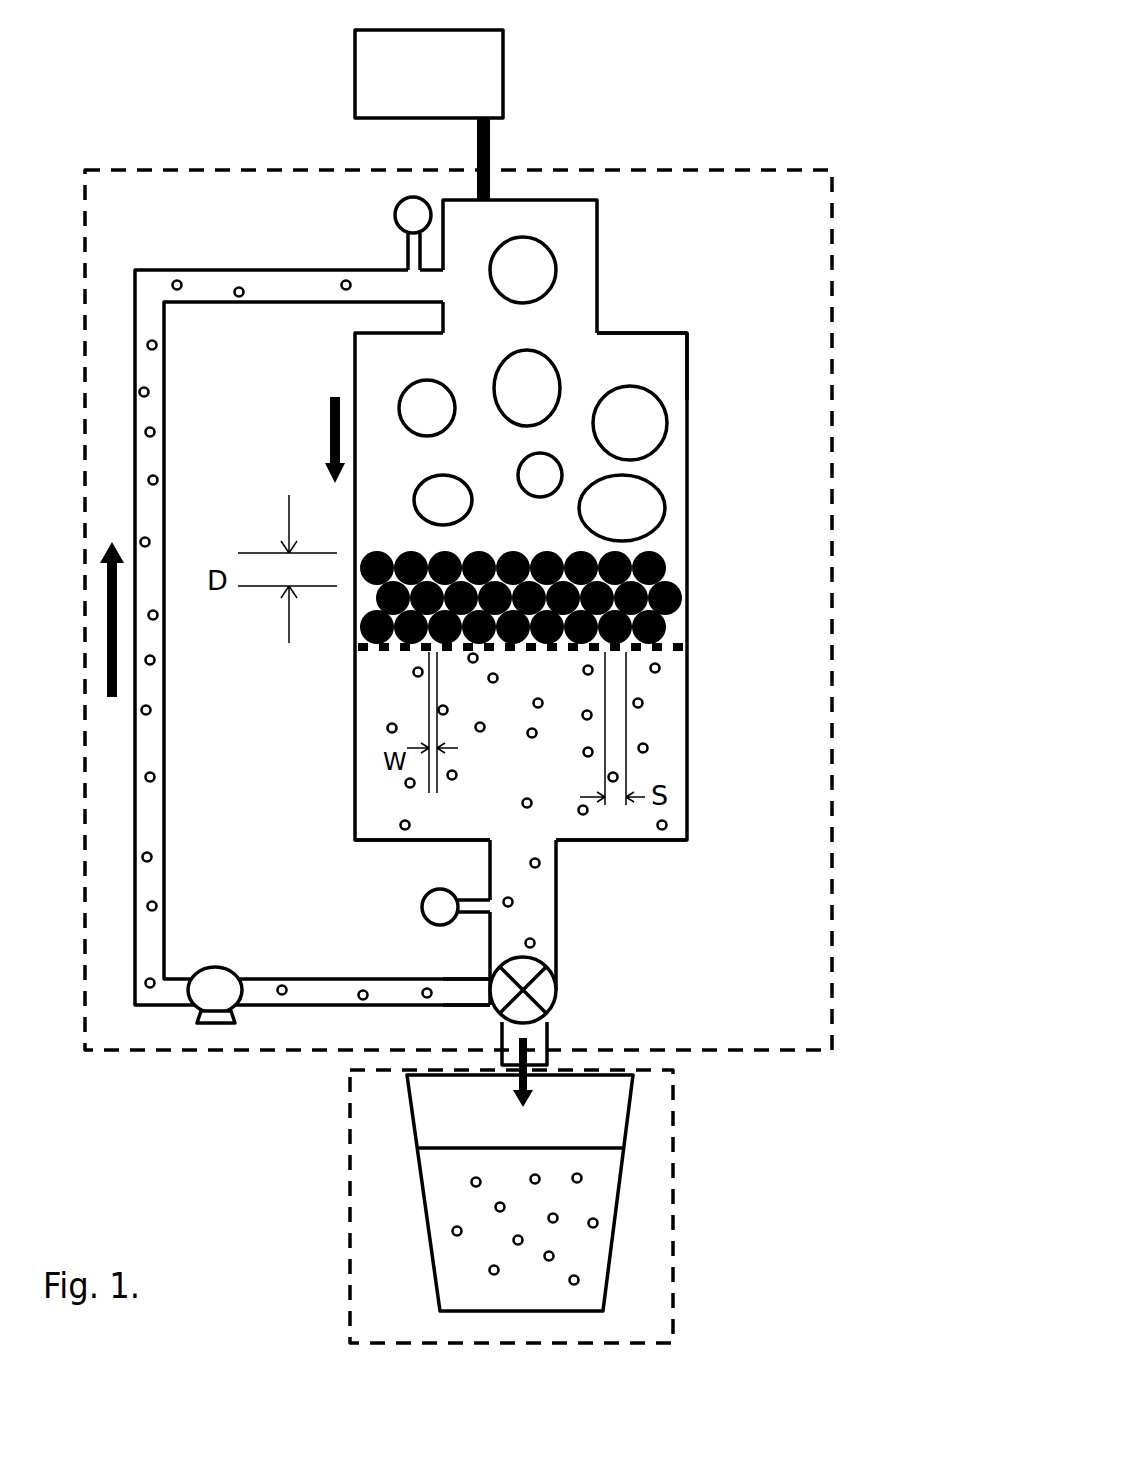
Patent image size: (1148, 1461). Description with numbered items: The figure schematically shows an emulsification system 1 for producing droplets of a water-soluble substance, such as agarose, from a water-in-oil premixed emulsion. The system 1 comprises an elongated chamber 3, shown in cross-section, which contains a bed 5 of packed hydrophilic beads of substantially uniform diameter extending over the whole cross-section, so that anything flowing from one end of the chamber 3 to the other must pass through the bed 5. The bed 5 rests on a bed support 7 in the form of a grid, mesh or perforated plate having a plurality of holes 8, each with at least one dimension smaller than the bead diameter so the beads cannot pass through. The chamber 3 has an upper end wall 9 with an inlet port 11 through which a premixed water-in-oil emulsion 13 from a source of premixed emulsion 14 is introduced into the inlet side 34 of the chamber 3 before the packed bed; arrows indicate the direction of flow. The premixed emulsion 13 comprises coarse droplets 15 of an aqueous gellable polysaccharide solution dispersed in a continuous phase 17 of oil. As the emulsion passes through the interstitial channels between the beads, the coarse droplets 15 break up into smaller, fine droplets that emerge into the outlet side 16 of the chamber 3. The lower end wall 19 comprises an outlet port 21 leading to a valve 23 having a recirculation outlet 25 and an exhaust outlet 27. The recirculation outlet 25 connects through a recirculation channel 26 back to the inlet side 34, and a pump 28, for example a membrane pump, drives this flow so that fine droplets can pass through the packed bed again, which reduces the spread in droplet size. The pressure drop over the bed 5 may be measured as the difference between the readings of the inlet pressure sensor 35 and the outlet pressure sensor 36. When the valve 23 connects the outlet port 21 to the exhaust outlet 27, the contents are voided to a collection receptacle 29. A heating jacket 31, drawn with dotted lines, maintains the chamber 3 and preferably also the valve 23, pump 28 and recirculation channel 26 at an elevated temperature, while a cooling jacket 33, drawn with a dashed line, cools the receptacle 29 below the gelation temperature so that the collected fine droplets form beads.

The emulsification system 1 is at (745, 190).
The elongated chamber 3 is at (687, 518).
The bed 5 is at (687, 578).
The bed support 7 is at (665, 640).
The holes 8 is at (667, 647).
The upper end wall 9 is at (667, 360).
The inlet port 11 is at (555, 200).
The premixed water-in-oil emulsion 13 is at (687, 337).
The source of premixed emulsion 14 is at (503, 72).
The coarse droplets 15 is at (633, 413).
The outlet side 16 is at (675, 810).
The continuous phase 17 is at (672, 470).
The lower end wall 19 is at (640, 843).
The outlet port 21 is at (558, 927).
The valve 23 is at (548, 990).
The recirculation outlet 25 is at (483, 1008).
The recirculation channel 26 is at (347, 1007).
The exhaust outlet 27 is at (540, 1037).
The pump 28 is at (218, 1023).
The collection receptacle 29 is at (632, 1110).
The heating jacket 31 is at (832, 983).
The cooling jacket 33 is at (673, 1223).
The inlet side 34 is at (600, 367).
The inlet pressure sensor 35 is at (395, 203).
The outlet pressure sensor 36 is at (425, 895).